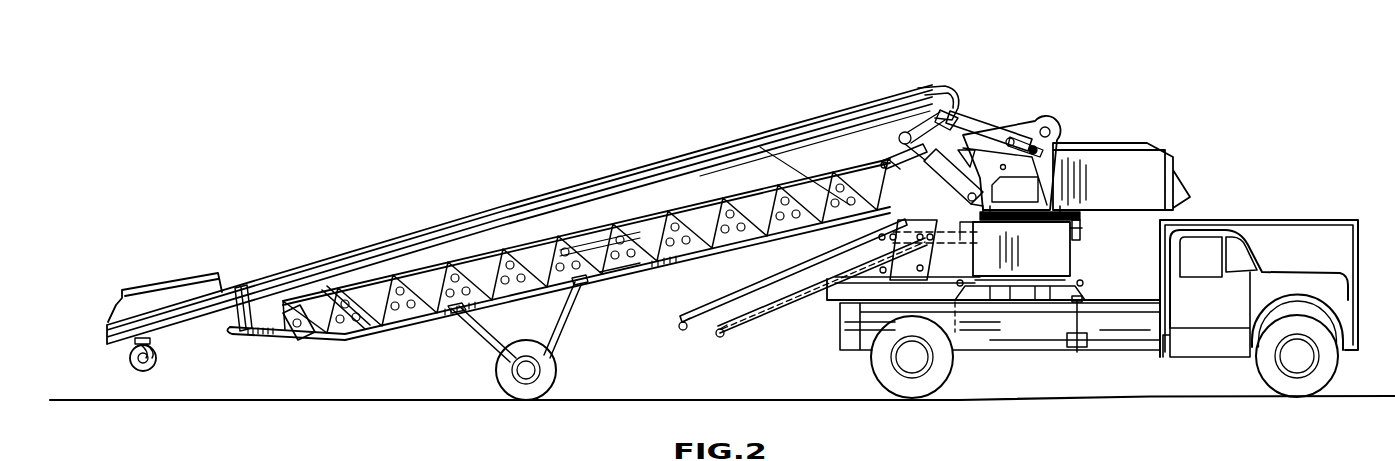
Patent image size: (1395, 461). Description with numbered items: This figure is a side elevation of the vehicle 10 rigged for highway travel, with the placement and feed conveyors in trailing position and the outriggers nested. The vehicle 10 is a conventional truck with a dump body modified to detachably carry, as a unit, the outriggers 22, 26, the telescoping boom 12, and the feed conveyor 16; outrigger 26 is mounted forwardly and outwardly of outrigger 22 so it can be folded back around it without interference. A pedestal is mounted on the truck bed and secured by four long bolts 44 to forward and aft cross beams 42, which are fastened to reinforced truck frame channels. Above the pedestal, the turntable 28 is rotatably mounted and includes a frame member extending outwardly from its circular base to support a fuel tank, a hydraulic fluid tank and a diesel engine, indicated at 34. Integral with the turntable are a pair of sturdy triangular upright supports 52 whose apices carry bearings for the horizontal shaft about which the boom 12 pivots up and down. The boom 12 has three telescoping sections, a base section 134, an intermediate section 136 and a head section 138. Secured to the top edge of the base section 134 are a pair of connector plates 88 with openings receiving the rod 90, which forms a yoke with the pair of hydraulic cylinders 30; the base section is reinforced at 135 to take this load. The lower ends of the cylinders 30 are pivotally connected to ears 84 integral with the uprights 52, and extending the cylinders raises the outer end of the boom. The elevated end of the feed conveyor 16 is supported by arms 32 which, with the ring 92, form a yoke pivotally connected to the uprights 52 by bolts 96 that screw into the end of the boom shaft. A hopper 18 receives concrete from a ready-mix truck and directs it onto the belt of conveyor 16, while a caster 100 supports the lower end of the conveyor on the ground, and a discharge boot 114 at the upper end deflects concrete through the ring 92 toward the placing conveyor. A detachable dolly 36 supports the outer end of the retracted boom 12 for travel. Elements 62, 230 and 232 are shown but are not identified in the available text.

The vehicle 10 is at (1103, 349).
The telescoping boom 12 is at (607, 282).
The feed conveyor 16 is at (413, 237).
The hopper 18 is at (160, 284).
The outrigger 22 is at (694, 332).
The outrigger 26 is at (788, 305).
The turntable 28 is at (1075, 205).
The hydraulic cylinders 30 is at (961, 155).
The yoke arms 32 is at (985, 128).
The fuel tank, hydraulic fluid tank and diesel engine 34 is at (1148, 143).
The detachable dolly 36 is at (478, 338).
The cross beams 42 is at (584, 6).
The long bolts 44 is at (1070, 312).
The triangular upright supports 52 is at (1062, 150).
The base housing 62 is at (1058, 266).
The ears 84 is at (983, 238).
The connector plates 88 is at (918, 116).
The rod 90 is at (880, 112).
The ring 92 is at (963, 118).
The bolts 96 is at (1035, 148).
The caster 100 is at (158, 362).
The discharge boot 114 is at (938, 92).
The base section 134 is at (620, 267).
The strengthening plates 135 is at (760, 147).
The intermediate section 136 is at (318, 322).
The head section 138 is at (263, 317).
The strut 230 is at (838, 218).
The guide rail 232 is at (847, 118).